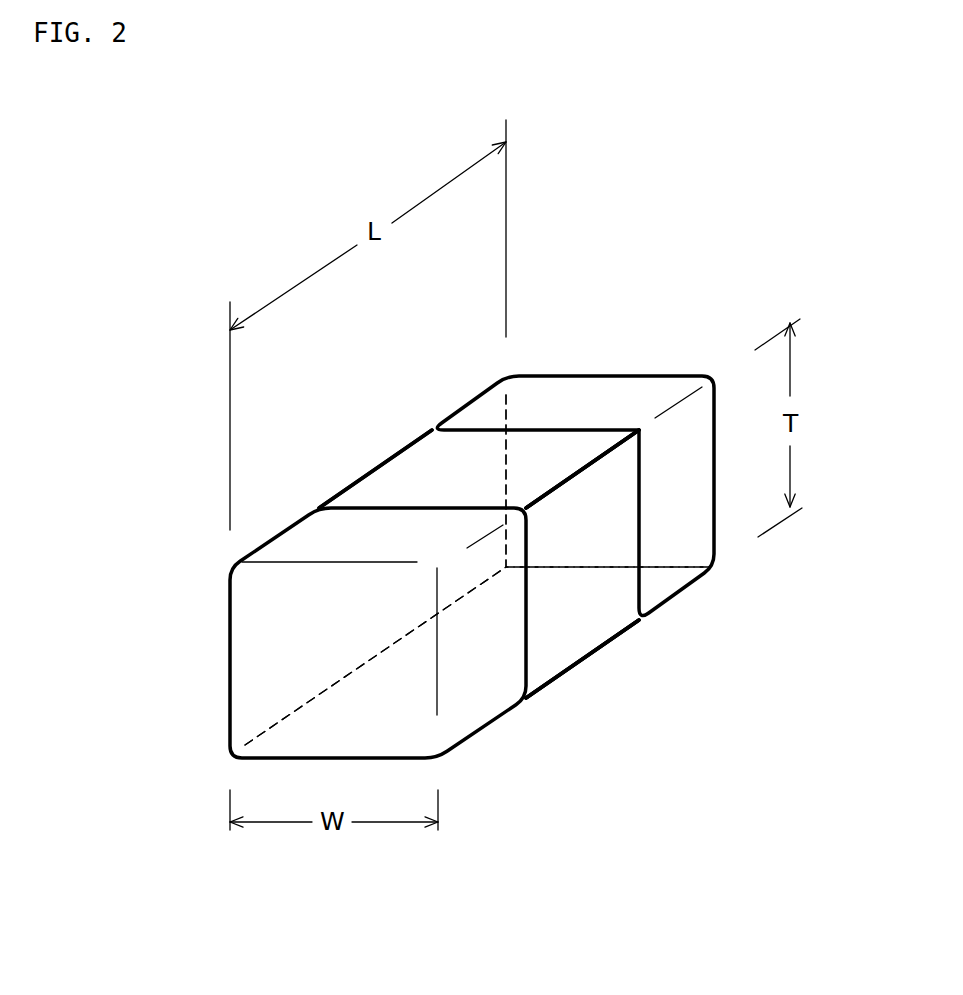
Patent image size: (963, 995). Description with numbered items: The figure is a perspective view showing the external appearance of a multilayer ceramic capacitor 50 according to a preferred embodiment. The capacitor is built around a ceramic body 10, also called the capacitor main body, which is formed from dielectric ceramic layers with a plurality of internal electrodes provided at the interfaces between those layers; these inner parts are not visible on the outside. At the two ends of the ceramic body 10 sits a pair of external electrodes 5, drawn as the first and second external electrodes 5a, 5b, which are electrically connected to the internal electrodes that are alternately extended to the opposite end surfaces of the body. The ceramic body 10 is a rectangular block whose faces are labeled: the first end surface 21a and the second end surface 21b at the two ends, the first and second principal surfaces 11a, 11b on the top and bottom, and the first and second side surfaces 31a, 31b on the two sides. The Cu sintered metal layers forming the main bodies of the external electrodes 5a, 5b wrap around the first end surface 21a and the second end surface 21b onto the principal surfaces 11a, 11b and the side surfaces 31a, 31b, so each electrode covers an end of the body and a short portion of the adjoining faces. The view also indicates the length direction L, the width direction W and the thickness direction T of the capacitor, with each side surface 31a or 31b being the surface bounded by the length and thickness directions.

The multilayer ceramic capacitor 50 is at (560, 288).
The ceramic body 10 is at (602, 640).
The external electrodes 5 is at (544, 618).
The external electrode 5a is at (462, 683).
The external electrode 5b is at (685, 515).
The first principal surface 11a is at (390, 495).
The second principal surface 11b is at (543, 645).
The first end surface 21a is at (280, 667).
The second end surface 21b is at (617, 410).
The first side surface 31a is at (430, 472).
The second side surface 31b is at (643, 617).